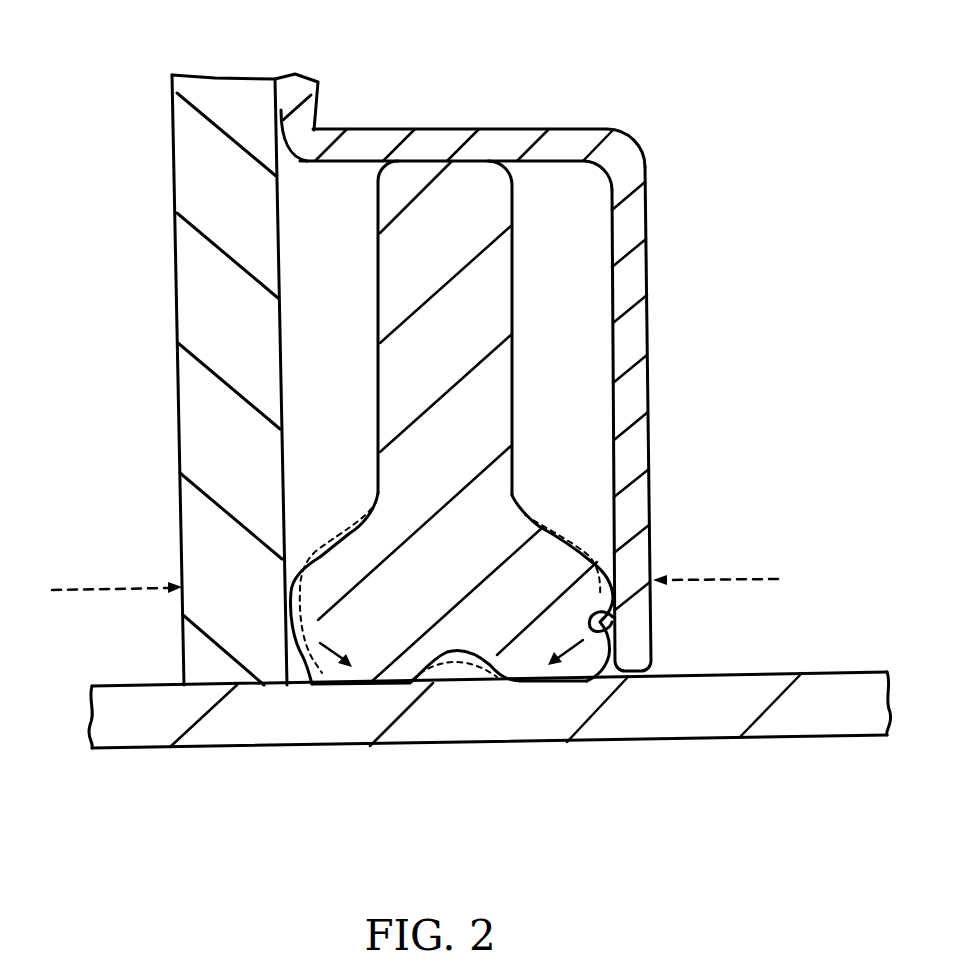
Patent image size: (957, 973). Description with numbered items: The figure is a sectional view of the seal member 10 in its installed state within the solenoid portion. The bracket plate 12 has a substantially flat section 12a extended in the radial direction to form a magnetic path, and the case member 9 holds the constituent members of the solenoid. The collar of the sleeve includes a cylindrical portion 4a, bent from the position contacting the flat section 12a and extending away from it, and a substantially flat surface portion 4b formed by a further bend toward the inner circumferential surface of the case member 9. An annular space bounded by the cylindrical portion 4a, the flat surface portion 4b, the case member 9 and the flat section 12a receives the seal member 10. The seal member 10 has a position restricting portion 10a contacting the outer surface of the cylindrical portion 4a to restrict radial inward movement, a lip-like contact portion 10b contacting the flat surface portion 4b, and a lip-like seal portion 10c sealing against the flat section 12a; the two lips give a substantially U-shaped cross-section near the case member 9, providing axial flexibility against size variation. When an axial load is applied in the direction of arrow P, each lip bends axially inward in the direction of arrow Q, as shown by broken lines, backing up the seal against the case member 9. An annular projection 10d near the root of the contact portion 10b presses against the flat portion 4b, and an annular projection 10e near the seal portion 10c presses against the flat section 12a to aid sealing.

The bracket plate 12 is at (205, 621).
The substantially flat section 12a is at (282, 223).
The cylindrical portion 4a is at (549, 165).
The substantially flat surface portion 4b is at (613, 349).
The seal member 10 is at (568, 463).
The position restricting portion 10a is at (390, 161).
The contact portion 10b is at (613, 617).
The seal portion 10c is at (294, 687).
The annular projection 10d is at (613, 553).
The annular projection 10e is at (297, 567).
The case member 9 is at (607, 740).
The arrow P is at (415, 584).
The arrow Q is at (451, 647).